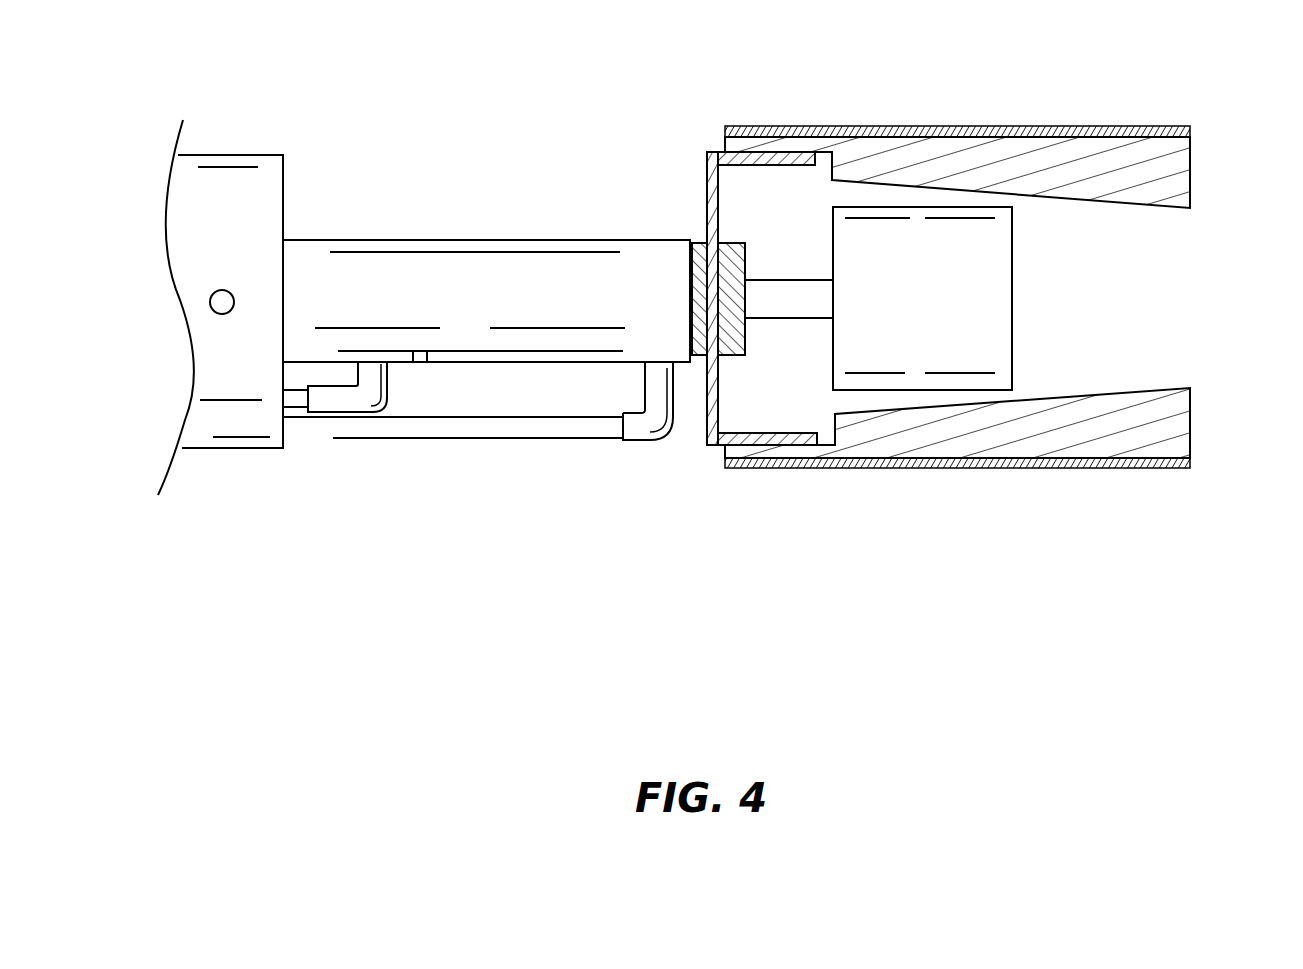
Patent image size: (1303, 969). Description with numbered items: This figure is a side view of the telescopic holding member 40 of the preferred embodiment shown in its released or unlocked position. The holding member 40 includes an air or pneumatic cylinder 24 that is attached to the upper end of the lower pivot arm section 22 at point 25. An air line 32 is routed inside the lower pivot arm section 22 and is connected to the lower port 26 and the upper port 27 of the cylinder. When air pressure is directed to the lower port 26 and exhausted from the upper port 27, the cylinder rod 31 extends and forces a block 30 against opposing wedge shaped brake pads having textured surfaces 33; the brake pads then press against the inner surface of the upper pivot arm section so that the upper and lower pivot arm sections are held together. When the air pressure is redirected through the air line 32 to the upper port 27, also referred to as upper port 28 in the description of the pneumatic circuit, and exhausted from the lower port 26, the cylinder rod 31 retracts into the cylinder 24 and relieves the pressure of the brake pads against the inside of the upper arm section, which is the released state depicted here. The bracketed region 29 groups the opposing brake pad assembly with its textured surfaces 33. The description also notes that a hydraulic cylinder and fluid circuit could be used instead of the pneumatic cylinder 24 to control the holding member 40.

The lower pivot arm section 22 is at (253, 155).
The pneumatic cylinder 24 is at (399, 236).
The attachment point 25 is at (220, 287).
The lower port 26 is at (388, 370).
The upper port 27 is at (628, 441).
The upper port 28 is at (706, 178).
The sleeve assembly 29 is at (1197, 184).
The block 30 is at (1013, 269).
The cylinder rod 31 is at (812, 277).
The air line 32 is at (295, 408).
The textured surfaces 33 is at (1035, 124).
The holding member 40 is at (786, 86).